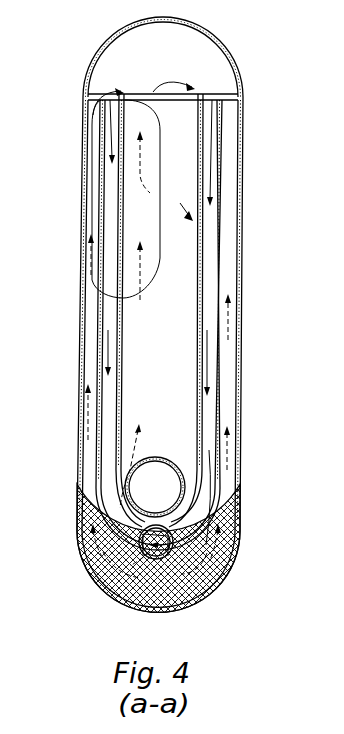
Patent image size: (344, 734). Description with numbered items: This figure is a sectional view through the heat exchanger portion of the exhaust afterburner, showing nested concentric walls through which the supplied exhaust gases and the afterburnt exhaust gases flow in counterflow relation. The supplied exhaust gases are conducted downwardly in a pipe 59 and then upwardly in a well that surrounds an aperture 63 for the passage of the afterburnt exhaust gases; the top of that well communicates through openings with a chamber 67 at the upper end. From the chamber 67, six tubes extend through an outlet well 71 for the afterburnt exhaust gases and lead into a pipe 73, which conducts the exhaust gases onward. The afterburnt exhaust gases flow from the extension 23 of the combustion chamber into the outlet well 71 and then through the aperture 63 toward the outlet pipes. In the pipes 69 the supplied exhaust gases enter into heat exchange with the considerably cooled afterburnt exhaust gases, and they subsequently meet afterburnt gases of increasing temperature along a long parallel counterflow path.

The chamber 67 is at (142, 68).
The pipes 69 is at (217, 171).
The aperture 63 is at (152, 262).
The outlet well 71 is at (88, 354).
The pipe 59 is at (167, 494).
The extension of the combustion chamber 23 is at (217, 581).
The pipe 73 is at (159, 548).